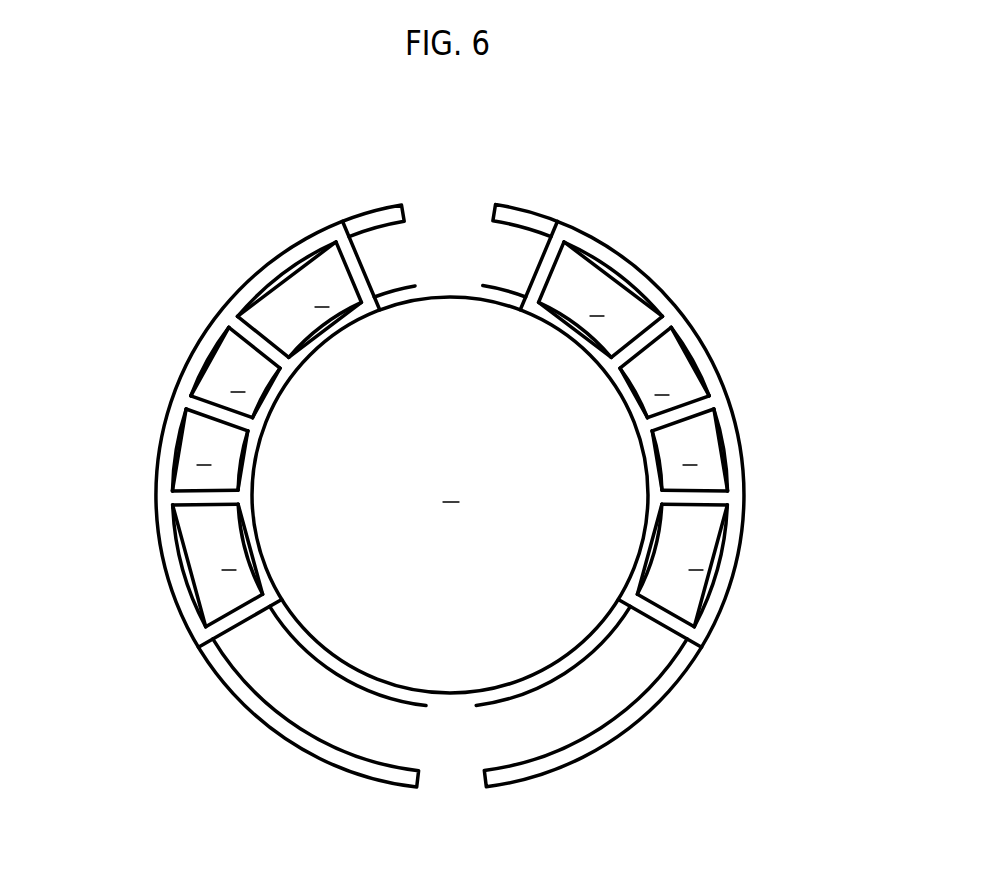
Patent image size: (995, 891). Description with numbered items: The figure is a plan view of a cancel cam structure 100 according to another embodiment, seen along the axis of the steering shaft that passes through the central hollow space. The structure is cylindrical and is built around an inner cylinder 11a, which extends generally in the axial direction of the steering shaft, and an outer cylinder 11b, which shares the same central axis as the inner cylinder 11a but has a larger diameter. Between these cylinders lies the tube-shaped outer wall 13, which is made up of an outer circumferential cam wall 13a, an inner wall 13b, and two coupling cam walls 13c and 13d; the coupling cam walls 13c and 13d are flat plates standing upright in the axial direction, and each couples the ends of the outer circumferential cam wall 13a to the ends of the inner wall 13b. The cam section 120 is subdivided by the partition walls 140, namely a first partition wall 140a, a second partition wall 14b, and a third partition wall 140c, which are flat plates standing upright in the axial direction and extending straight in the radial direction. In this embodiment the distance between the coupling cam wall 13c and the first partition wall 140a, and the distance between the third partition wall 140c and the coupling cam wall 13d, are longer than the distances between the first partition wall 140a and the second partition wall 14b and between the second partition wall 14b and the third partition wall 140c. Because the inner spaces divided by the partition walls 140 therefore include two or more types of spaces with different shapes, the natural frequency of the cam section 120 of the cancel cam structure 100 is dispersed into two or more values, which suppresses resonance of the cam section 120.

The cancel cam structure 100 is at (610, 192).
The cam section 120 is at (247, 245).
The inner cylinder 11a is at (536, 671).
The outer cylinder 11b is at (607, 747).
The outer wall 13 is at (87, 281).
The outer circumferential cam wall 13a is at (208, 332).
The inner wall 13b is at (270, 378).
The coupling cam wall 13c is at (193, 385).
The coupling cam wall 13d is at (222, 613).
The partition walls 140 is at (360, 378).
The first partition wall 140a is at (268, 337).
The second partition wall 14b is at (229, 408).
The third partition wall 140c is at (210, 487).